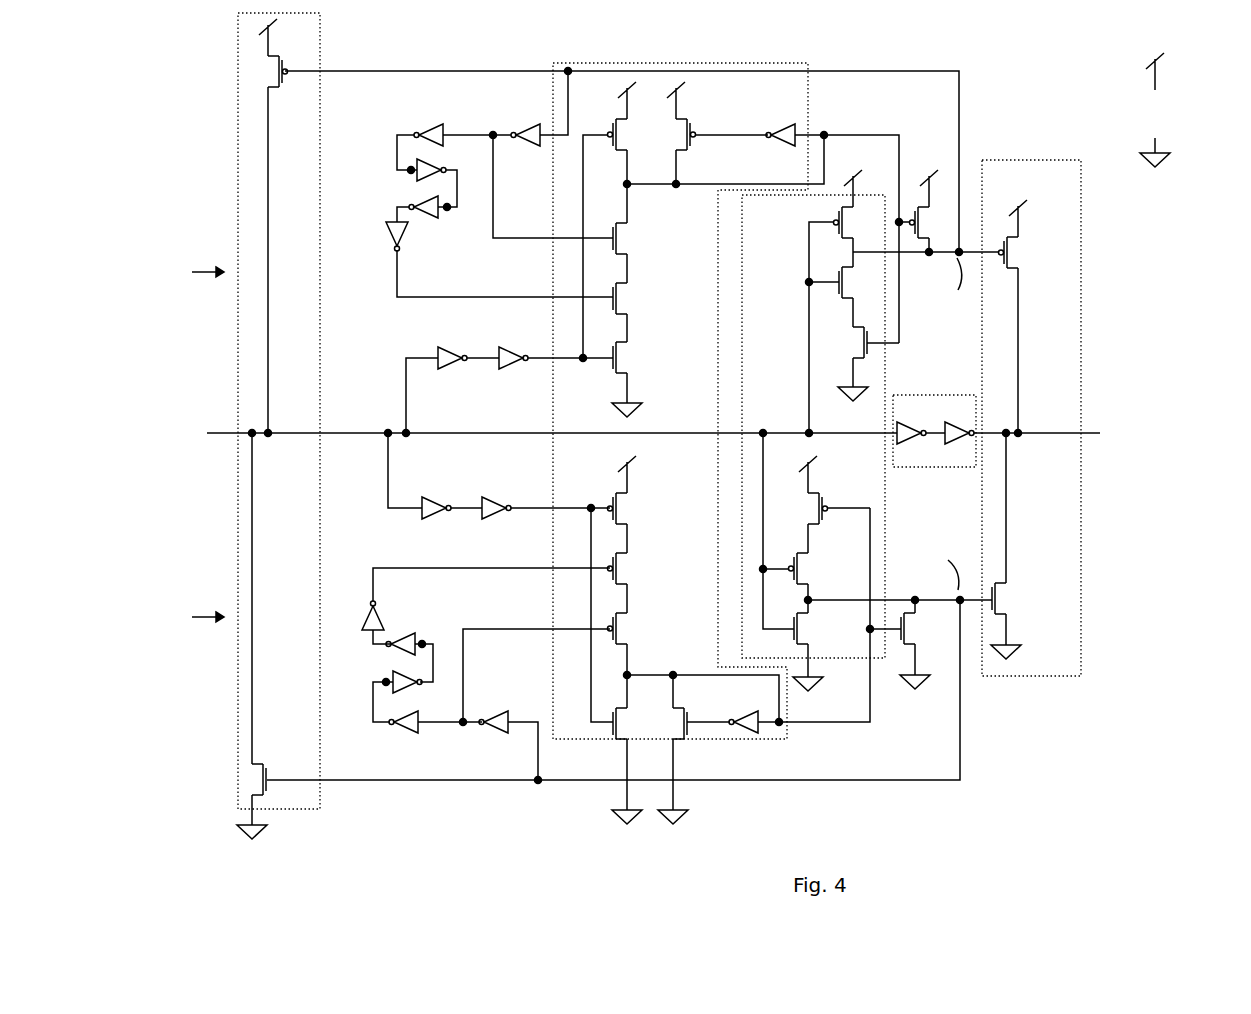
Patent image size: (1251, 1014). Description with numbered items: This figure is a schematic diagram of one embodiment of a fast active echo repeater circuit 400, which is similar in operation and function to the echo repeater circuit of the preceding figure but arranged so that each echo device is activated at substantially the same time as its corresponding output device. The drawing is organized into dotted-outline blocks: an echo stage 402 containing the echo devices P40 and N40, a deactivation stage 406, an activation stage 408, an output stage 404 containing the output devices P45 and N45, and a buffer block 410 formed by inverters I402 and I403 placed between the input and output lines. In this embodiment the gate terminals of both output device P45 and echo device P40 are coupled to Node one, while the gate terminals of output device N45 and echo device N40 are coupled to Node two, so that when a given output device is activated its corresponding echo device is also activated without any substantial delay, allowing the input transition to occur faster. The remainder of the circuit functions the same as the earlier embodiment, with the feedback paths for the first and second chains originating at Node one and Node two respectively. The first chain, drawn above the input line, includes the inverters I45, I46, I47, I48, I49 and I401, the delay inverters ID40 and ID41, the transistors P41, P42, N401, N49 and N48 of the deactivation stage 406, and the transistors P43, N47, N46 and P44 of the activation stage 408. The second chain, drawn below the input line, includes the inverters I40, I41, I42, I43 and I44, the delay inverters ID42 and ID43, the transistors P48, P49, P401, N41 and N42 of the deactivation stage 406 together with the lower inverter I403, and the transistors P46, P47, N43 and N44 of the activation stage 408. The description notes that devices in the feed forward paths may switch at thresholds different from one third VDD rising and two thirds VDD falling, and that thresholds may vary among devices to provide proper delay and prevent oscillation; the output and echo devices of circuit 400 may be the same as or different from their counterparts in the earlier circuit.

The fast echo repeater circuit 400 is at (1201, 324).
The echo stage 402 is at (320, 809).
The output stage 404 is at (1081, 676).
The deactivation stage 406 is at (578, 740).
The activation stage 408 is at (877, 660).
The buffer (inverter pair I402, I403) 410 is at (920, 415).
The echo device P40 is at (609, 226).
The echo device N40 is at (598, 636).
The PMOS transistor P41 is at (609, 220).
The PMOS transistor P42 is at (717, 135).
The NMOS transistor N401 is at (588, 209).
The NMOS transistor N49 is at (642, 312).
The NMOS transistor N48 is at (641, 379).
The PMOS transistor P48 is at (636, 504).
The PMOS transistor P49 is at (638, 583).
The PMOS transistor P401 is at (643, 660).
The NMOS transistor N41 is at (616, 666).
The NMOS transistor N42 is at (703, 748).
The PMOS transistor P43 is at (827, 301).
The NMOS transistor N47 is at (852, 297).
The NMOS transistor N46 is at (855, 364).
The PMOS transistor P44 is at (925, 224).
The output device P45 is at (1029, 316).
The PMOS transistor P46 is at (821, 504).
The PMOS transistor P47 is at (801, 523).
The NMOS transistor N43 is at (785, 630).
The NMOS transistor N44 is at (911, 643).
The output device N45 is at (1020, 546).
The inverter I40 is at (508, 745).
The inverter I41 is at (494, 688).
The inverter I42 is at (476, 606).
The inverter I43 is at (419, 487).
The inverter I44 is at (530, 518).
The inverter I45 is at (436, 380).
The inverter I46 is at (540, 348).
The inverter I47 is at (499, 259).
The inverter I48 is at (420, 142).
The inverter I49 is at (505, 108).
The inverter I401 is at (765, 225).
The inverter I402 is at (921, 443).
The inverter I403 is at (801, 620).
The delay inverter ID40 is at (445, 182).
The delay inverter ID41 is at (411, 205).
The delay inverter ID42 is at (411, 648).
The delay inverter ID43 is at (386, 689).